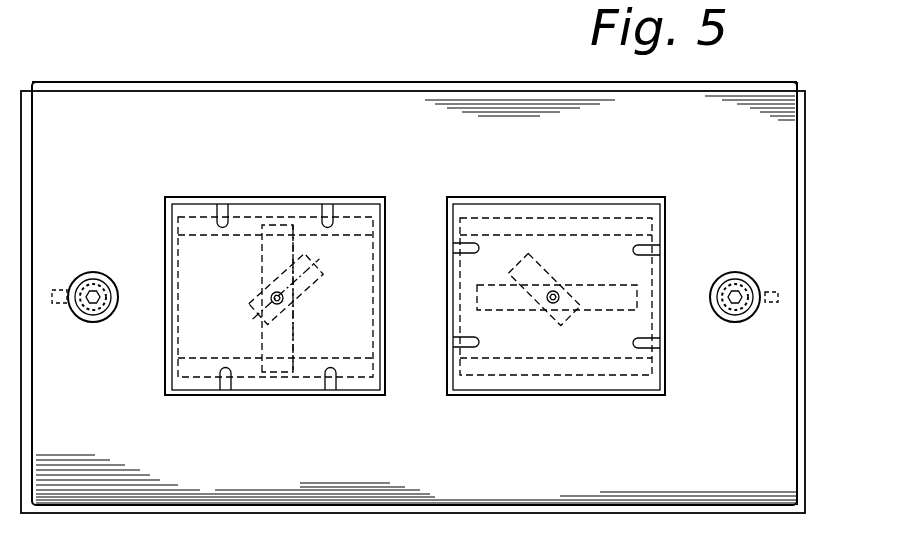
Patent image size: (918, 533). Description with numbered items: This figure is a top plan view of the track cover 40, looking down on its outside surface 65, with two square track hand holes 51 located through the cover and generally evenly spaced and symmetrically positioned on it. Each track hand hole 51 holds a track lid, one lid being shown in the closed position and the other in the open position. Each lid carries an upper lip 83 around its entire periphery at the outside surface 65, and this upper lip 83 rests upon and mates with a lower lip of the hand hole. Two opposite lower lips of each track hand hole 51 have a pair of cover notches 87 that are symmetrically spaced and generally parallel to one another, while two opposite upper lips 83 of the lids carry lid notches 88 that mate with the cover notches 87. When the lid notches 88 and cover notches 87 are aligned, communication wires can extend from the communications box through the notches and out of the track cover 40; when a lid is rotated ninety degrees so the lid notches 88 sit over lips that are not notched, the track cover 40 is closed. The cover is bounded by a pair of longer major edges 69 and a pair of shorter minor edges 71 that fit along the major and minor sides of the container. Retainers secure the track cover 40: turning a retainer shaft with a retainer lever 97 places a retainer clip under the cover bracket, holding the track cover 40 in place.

The track cover 40 is at (100, 72).
The track hand hole 51 is at (198, 358).
The outside surface 65 is at (438, 459).
The major edge 69 is at (318, 81).
The minor edge 71 is at (801, 162).
The upper lip 83 is at (267, 216).
The cover notch 87 is at (641, 242).
The lid notch 88 is at (688, 352).
The retainer lever 97 is at (773, 290).